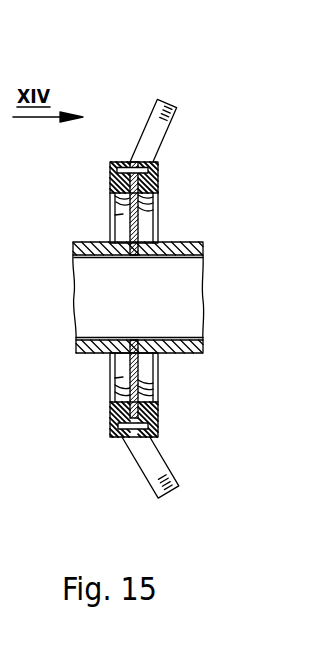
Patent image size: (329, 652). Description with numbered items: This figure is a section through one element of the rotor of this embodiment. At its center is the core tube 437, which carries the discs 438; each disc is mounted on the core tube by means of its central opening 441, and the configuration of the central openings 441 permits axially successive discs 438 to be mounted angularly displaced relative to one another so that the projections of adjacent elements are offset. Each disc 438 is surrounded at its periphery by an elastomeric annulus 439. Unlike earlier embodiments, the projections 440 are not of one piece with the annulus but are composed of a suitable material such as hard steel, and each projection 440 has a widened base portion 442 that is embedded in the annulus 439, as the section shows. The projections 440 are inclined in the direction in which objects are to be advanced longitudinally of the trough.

The core tube 437 is at (103, 290).
The discs 438 is at (138, 223).
The elastomeric annulus 439 is at (157, 166).
The projections 440 is at (171, 105).
The central openings 441 is at (89, 420).
The widened base portion 442 is at (125, 166).